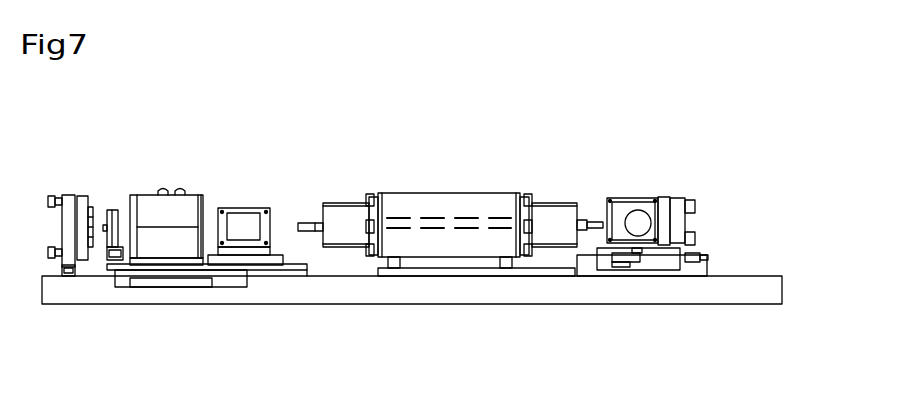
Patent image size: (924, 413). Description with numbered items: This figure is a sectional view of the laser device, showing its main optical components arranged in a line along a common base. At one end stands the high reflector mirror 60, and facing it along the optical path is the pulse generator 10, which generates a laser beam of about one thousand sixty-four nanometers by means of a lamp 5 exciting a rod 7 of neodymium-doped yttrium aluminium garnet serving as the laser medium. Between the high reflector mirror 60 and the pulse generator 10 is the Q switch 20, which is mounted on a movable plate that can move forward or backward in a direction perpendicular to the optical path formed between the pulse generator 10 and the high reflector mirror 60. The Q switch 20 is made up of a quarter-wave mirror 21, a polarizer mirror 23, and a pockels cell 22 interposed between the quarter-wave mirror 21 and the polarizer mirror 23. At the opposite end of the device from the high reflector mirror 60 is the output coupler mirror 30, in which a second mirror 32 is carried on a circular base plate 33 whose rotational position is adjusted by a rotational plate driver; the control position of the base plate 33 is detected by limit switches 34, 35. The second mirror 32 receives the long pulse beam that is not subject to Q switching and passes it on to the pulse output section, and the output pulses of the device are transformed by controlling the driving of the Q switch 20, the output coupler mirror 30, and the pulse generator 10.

The lamp 5 is at (592, 228).
The rod 7 is at (467, 228).
The pulse generator 10 is at (437, 238).
The Q switch 20 is at (166, 270).
The quarter-wave mirror 21 is at (105, 262).
The pockels cell 22 is at (147, 205).
The polarizer mirror 23 is at (248, 232).
The output coupler mirror 30 is at (678, 237).
The second mirror 32 is at (642, 220).
The base plate 33 is at (650, 257).
The limit switch 34 is at (622, 270).
The limit switch 35 is at (708, 257).
The high reflector mirror 60 is at (70, 205).